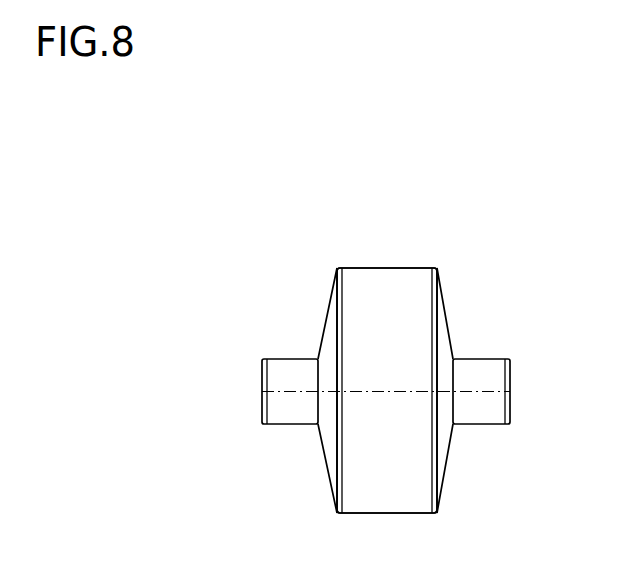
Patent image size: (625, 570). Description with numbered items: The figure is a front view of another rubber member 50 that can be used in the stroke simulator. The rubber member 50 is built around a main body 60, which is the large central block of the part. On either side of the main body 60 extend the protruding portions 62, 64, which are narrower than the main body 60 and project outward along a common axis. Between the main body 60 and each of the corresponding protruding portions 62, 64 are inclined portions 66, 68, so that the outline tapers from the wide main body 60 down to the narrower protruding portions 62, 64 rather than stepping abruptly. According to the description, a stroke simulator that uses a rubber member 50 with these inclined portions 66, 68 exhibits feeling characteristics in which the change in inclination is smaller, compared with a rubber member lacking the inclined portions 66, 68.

The rubber member 50 is at (392, 236).
The main body 60 is at (402, 305).
The protruding portion 62 is at (495, 407).
The protruding portion 64 is at (292, 380).
The inclined portion 66 is at (445, 337).
The inclined portion 68 is at (329, 466).